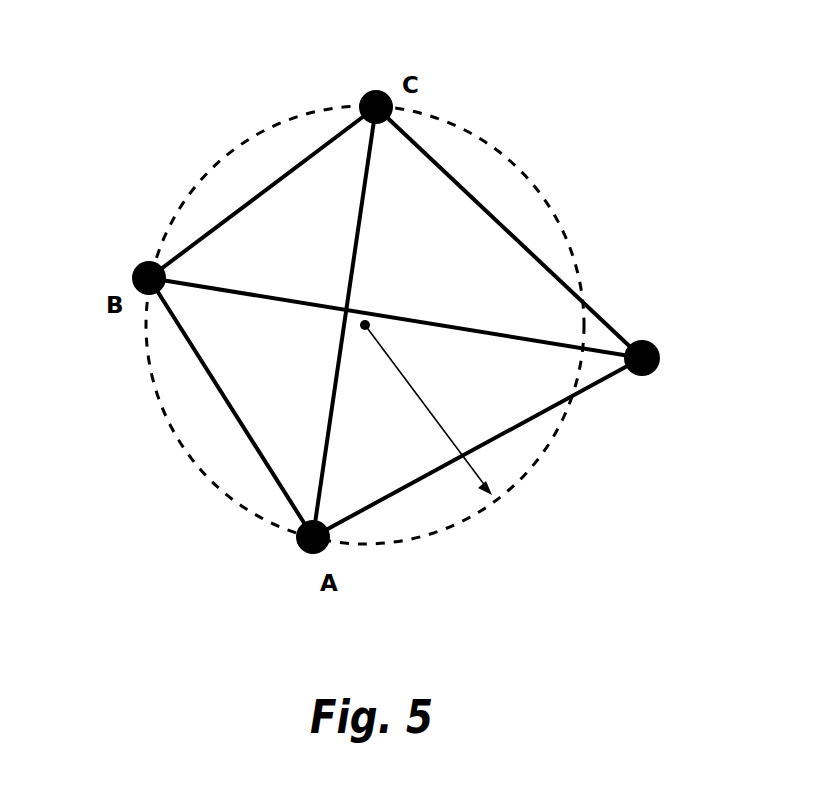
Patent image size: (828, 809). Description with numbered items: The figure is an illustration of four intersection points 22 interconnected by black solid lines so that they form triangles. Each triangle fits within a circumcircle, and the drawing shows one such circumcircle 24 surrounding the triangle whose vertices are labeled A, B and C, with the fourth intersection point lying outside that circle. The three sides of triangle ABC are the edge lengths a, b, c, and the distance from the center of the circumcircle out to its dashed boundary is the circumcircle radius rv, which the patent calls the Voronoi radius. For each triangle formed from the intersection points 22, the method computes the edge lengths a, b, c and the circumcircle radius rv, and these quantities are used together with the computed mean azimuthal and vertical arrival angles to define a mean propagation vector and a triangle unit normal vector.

The intersection points 22 is at (372, 92).
The circumcircle 24 is at (520, 167).
The edge length a is at (231, 407).
The edge length b is at (262, 192).
The edge length c is at (345, 322).
The circumcircle radius rv is at (426, 407).